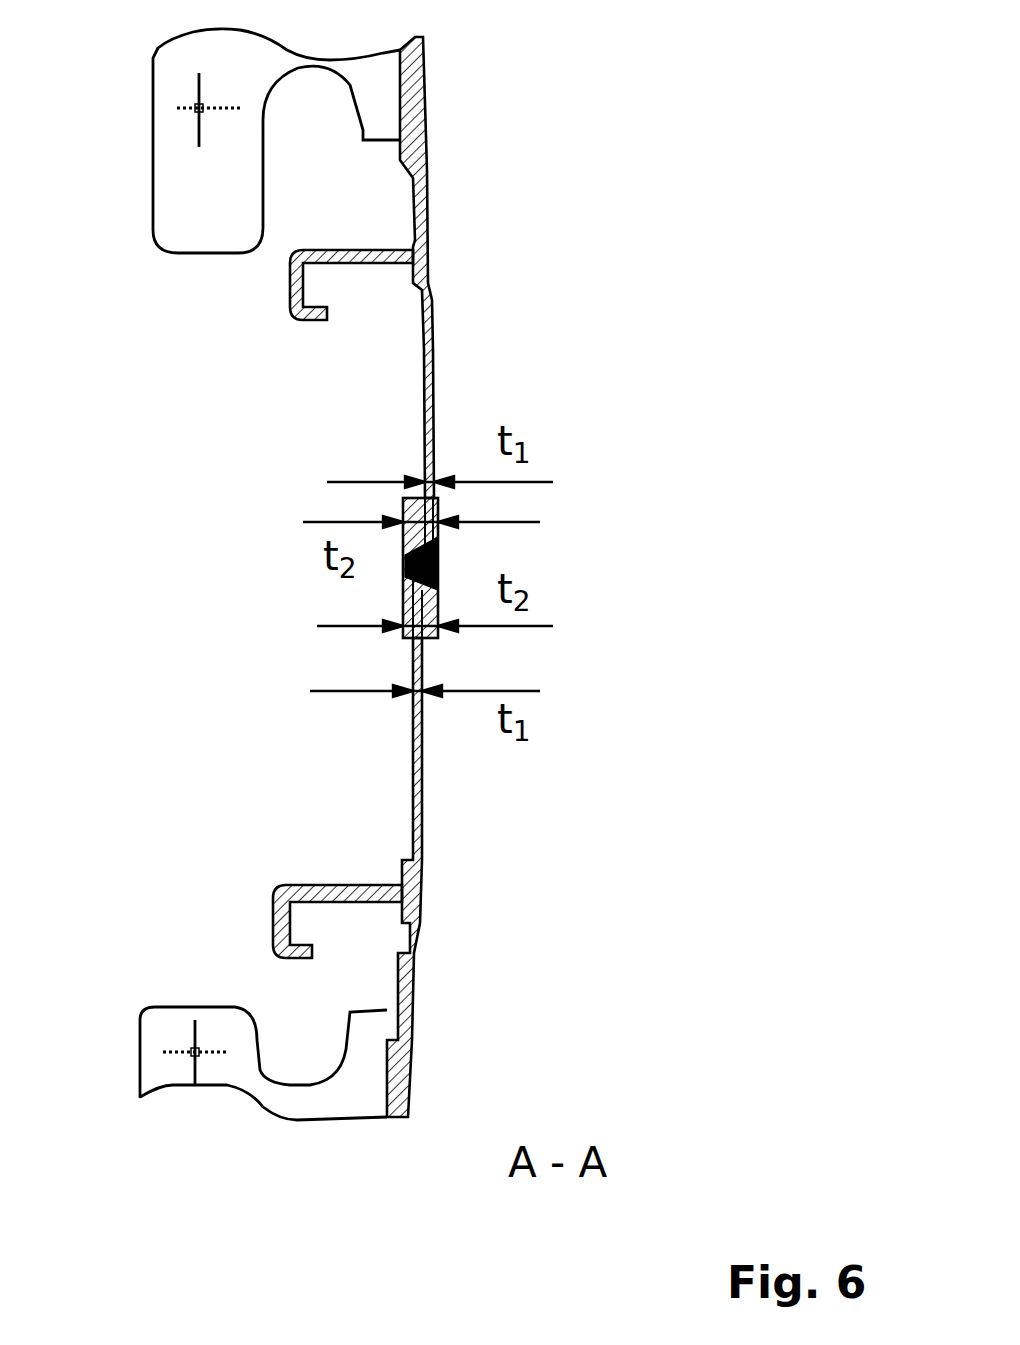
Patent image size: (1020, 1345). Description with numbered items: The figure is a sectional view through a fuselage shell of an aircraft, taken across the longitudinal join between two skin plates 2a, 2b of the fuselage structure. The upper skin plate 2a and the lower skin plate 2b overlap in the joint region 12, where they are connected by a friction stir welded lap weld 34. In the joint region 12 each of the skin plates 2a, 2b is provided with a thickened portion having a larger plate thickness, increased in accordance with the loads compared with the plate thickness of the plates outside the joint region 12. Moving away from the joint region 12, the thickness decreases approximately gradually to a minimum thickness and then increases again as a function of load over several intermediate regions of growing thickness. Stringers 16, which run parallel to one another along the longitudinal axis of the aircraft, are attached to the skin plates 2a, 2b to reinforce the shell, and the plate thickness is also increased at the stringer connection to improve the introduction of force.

The joint region 12 is at (272, 502).
The skin plate 2a is at (432, 347).
The skin plate 2b is at (421, 810).
The lap weld 34 is at (455, 560).
The stringer 16 is at (287, 270).